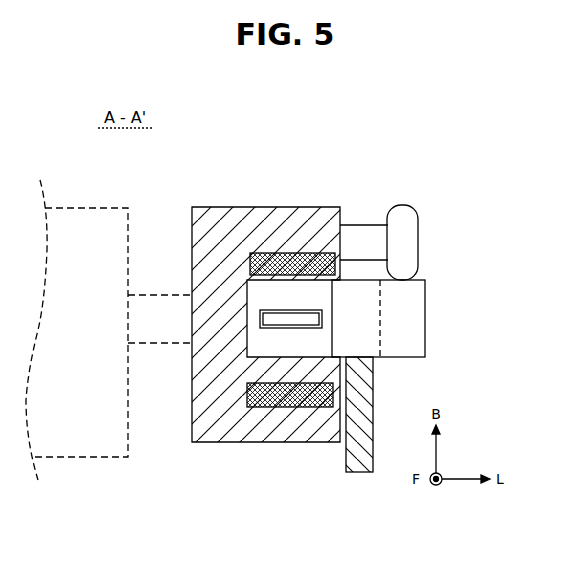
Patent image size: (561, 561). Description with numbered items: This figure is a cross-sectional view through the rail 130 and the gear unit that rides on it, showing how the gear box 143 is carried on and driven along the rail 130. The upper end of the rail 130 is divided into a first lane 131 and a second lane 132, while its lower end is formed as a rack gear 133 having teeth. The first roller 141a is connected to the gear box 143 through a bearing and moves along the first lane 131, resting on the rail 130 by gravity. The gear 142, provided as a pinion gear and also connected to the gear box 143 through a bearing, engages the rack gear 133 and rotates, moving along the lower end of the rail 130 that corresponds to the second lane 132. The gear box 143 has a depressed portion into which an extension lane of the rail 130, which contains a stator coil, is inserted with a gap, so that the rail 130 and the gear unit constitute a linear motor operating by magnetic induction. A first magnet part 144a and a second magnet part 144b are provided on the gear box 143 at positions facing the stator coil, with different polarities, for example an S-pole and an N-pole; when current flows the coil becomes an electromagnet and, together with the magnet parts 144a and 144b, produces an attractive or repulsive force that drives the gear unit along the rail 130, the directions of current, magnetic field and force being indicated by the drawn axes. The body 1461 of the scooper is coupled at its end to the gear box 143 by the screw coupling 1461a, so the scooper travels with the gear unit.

The rail 130 is at (434, 311).
The first lane 131 is at (425, 304).
The second lane 132 is at (356, 326).
The rack gear 133 is at (281, 310).
The first roller 141a is at (403, 212).
The gear 142 is at (357, 472).
The gear box 143 is at (215, 268).
The first magnet part 144a is at (290, 253).
The second magnet part 144b is at (272, 396).
The body 1461 is at (100, 457).
The screw coupling 1461a is at (160, 343).